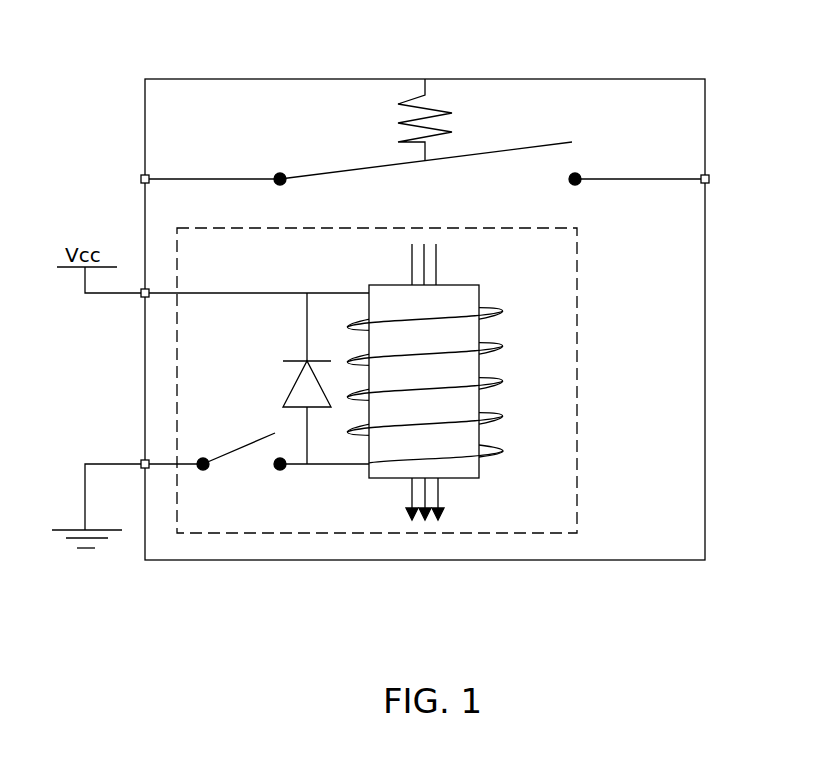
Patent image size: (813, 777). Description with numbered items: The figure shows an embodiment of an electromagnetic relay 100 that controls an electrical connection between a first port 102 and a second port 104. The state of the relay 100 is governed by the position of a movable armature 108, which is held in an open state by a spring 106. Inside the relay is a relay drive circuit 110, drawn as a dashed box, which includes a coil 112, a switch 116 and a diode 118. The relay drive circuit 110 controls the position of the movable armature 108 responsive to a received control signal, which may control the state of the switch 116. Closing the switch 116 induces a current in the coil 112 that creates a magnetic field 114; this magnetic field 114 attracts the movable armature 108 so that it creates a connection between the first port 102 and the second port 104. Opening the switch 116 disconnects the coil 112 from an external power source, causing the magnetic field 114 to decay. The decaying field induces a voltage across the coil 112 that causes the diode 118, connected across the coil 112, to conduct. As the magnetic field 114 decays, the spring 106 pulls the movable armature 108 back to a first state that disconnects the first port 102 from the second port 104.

The electromagnetic relay 100 is at (712, 78).
The first port 102 is at (142, 175).
The second port 104 is at (710, 176).
The spring 106 is at (450, 132).
The movable armature 108 is at (552, 142).
The relay drive circuit 110 is at (580, 255).
The coil 112 is at (503, 313).
The magnetic field 114 is at (438, 273).
The switch 116 is at (210, 468).
The diode 118 is at (288, 390).